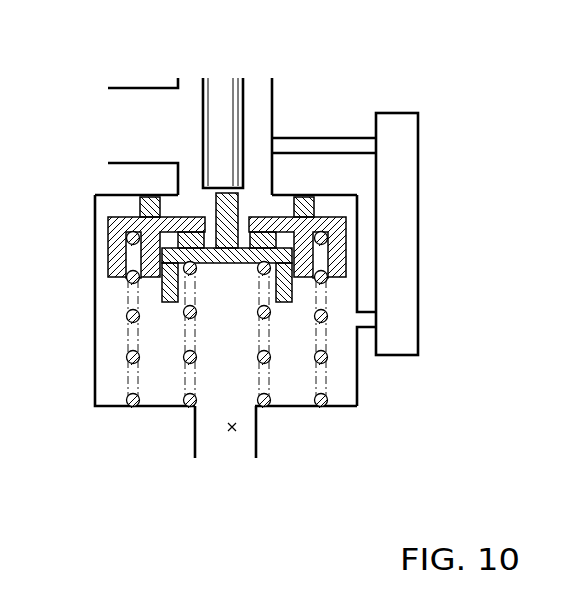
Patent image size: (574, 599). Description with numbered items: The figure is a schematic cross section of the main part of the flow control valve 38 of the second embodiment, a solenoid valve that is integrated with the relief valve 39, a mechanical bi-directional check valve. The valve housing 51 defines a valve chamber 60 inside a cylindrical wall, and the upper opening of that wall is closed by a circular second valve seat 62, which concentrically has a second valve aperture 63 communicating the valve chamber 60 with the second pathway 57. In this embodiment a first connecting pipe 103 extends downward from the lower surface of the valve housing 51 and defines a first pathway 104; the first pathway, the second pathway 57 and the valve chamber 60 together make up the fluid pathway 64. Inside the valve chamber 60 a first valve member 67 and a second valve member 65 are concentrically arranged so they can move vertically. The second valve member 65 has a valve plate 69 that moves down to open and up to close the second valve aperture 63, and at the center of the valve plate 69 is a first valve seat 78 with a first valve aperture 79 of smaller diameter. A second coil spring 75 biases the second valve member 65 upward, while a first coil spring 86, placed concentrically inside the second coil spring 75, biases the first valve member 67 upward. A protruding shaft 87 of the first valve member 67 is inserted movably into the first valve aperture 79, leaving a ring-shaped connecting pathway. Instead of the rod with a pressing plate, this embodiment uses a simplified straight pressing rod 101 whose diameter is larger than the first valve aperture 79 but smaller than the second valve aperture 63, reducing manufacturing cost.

The second pathway 57 is at (140, 103).
The pressing rod 101 is at (232, 100).
The flow control valve 38 is at (290, 58).
The relief valve 39 is at (419, 143).
The protruding shaft 87 is at (237, 213).
The valve plate 69 is at (335, 213).
The first valve seat 78 is at (340, 230).
The second valve aperture 63 is at (190, 187).
The second valve seat 62 is at (120, 187).
The second valve member 65 is at (108, 242).
The second coil spring 75 is at (125, 317).
The valve chamber 60 is at (105, 373).
The first coil spring 86 is at (183, 360).
The first connecting pipe 103 is at (192, 440).
The first pathway 104 is at (248, 448).
The first valve member 67 is at (219, 265).
The fluid pathway 64 is at (232, 434).
The first valve aperture 79 is at (247, 215).
The valve housing 51 is at (359, 368).